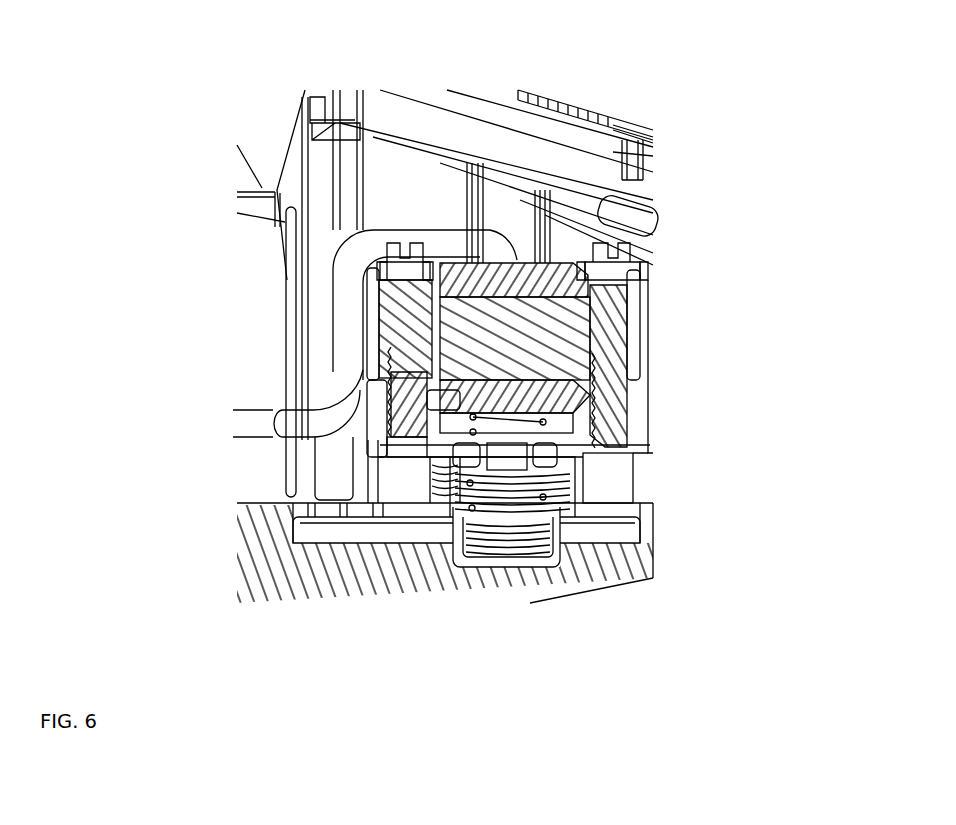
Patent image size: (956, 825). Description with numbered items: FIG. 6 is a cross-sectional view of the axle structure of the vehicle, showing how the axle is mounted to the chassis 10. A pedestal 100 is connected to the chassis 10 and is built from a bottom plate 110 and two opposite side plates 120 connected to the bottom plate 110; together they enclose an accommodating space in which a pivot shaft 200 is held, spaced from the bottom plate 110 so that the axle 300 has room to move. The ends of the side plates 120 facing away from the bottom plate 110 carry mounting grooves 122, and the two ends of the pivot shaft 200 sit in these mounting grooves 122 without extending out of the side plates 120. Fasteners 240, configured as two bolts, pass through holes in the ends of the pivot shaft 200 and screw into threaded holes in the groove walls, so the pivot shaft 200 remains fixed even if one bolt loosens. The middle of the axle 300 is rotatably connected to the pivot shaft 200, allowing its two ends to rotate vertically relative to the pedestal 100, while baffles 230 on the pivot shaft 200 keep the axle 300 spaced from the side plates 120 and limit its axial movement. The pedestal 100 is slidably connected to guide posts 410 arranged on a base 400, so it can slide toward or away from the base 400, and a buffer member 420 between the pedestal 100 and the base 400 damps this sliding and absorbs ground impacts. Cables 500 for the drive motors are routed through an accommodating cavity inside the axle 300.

The chassis 10 is at (288, 573).
The pedestal 100 is at (135, 488).
The bottom plate 110 is at (330, 517).
The side plates 120 is at (440, 385).
The mounting grooves 122 is at (350, 340).
The pivot shaft 200 is at (552, 352).
The baffles 230 is at (567, 262).
The fasteners 240 is at (610, 348).
The axle 300 is at (470, 262).
The base 400 is at (437, 450).
The guide posts 410 is at (615, 480).
The buffer member 420 is at (490, 520).
The cables 500 is at (257, 413).